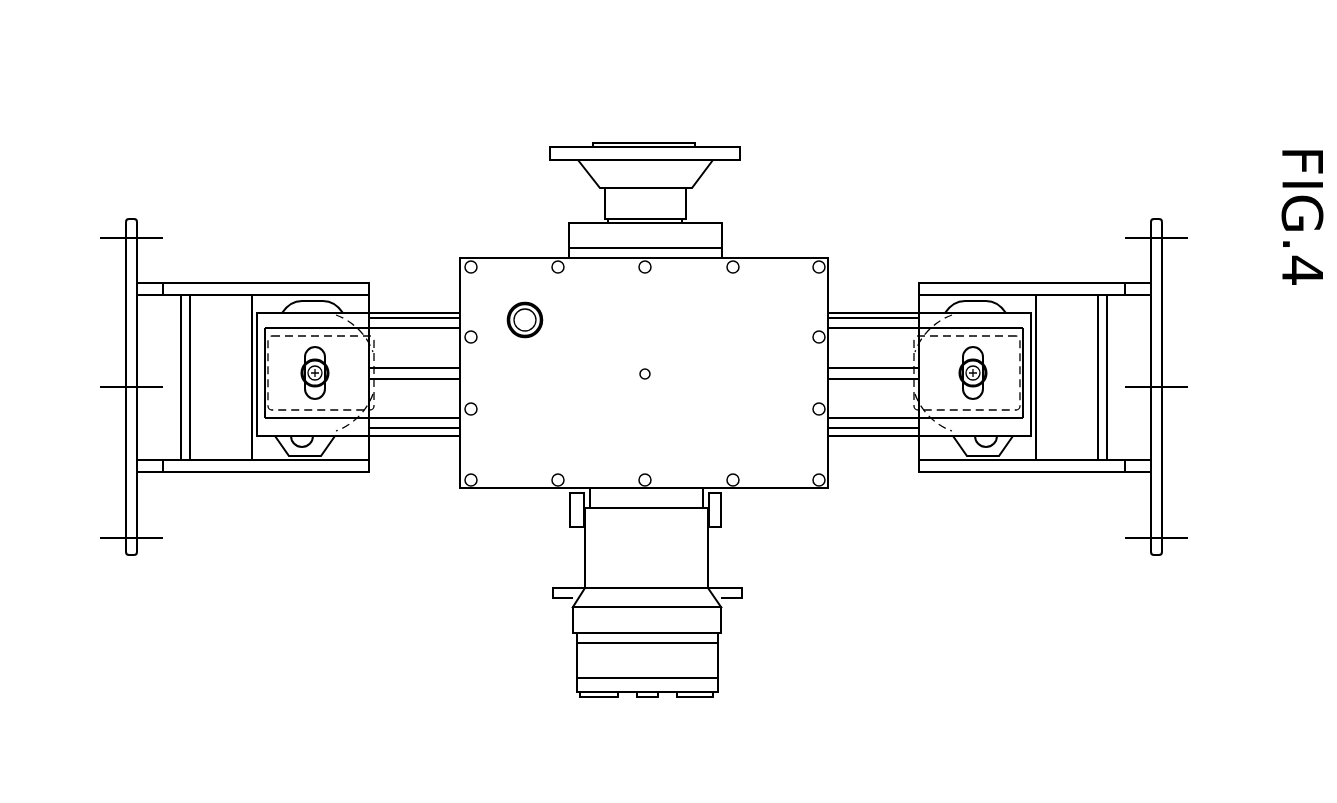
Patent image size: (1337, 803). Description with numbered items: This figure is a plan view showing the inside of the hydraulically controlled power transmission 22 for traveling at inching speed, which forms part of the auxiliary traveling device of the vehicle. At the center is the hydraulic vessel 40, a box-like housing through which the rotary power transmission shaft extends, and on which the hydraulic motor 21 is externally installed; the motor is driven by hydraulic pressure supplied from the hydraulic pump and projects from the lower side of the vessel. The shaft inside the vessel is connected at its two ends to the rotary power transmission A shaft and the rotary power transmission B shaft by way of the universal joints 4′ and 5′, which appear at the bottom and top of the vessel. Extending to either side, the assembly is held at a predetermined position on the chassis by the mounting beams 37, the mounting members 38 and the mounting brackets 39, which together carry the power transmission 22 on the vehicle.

The hydraulically controlled power transmission 22 is at (480, 568).
The hydraulic vessel 40 is at (772, 490).
The universal joint 5′ is at (568, 147).
The hydraulic motor 21 is at (702, 663).
The universal joint 4′ is at (562, 603).
The mounting bracket 39 is at (227, 283).
The mounting beam 37 is at (415, 312).
The mounting member 38 is at (352, 397).